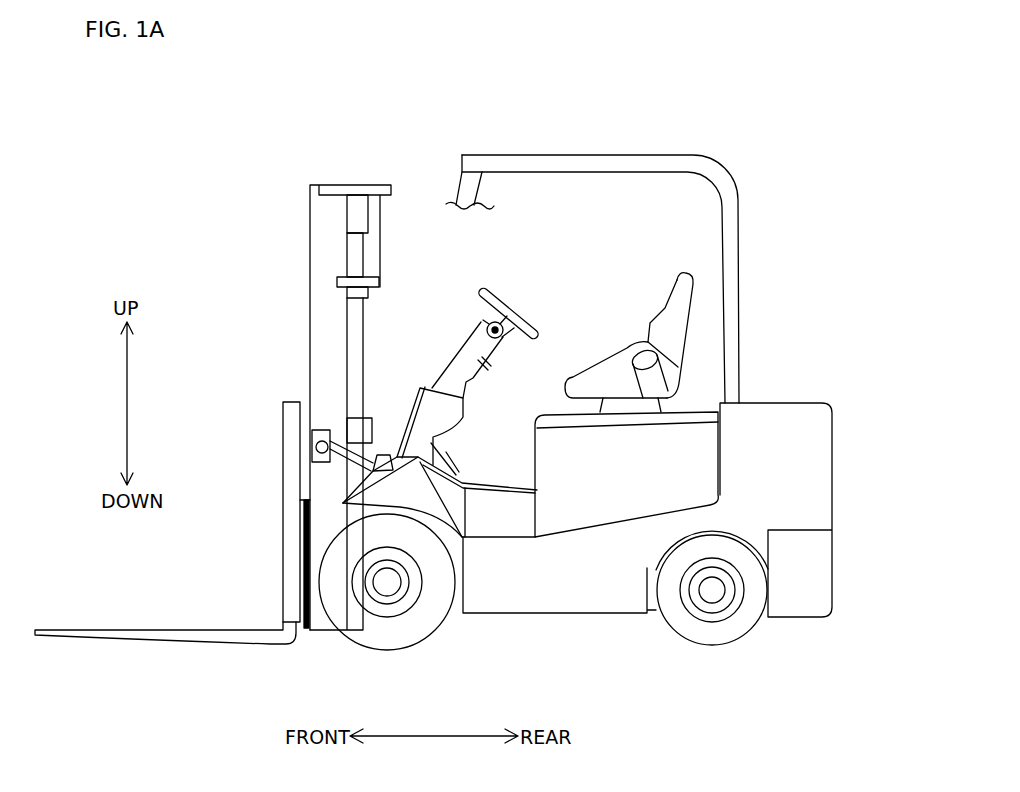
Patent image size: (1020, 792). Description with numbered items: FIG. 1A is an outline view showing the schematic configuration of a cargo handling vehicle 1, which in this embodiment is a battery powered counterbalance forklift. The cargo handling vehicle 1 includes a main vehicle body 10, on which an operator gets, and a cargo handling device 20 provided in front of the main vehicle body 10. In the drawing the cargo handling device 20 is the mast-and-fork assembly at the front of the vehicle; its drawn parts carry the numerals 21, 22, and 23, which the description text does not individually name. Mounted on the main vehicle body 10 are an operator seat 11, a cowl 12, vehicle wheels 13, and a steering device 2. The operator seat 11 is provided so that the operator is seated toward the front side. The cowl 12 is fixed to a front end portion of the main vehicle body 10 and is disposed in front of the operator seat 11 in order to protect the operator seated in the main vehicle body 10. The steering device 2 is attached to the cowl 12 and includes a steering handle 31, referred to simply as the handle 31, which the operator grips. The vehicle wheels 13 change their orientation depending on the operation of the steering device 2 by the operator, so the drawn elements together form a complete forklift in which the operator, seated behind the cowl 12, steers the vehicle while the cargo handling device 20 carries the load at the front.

The cargo handling vehicle 1 is at (679, 94).
The steering device 2 is at (524, 270).
The main vehicle body 10 is at (803, 378).
The operator seat 11 is at (630, 355).
The cowl 12 is at (420, 388).
The vehicle wheels 13 is at (725, 550).
The cargo handling device 20 is at (276, 376).
The fork 21 is at (178, 632).
The mast 22 is at (310, 261).
The lift bracket 23 is at (378, 455).
The steering handle 31 is at (530, 333).